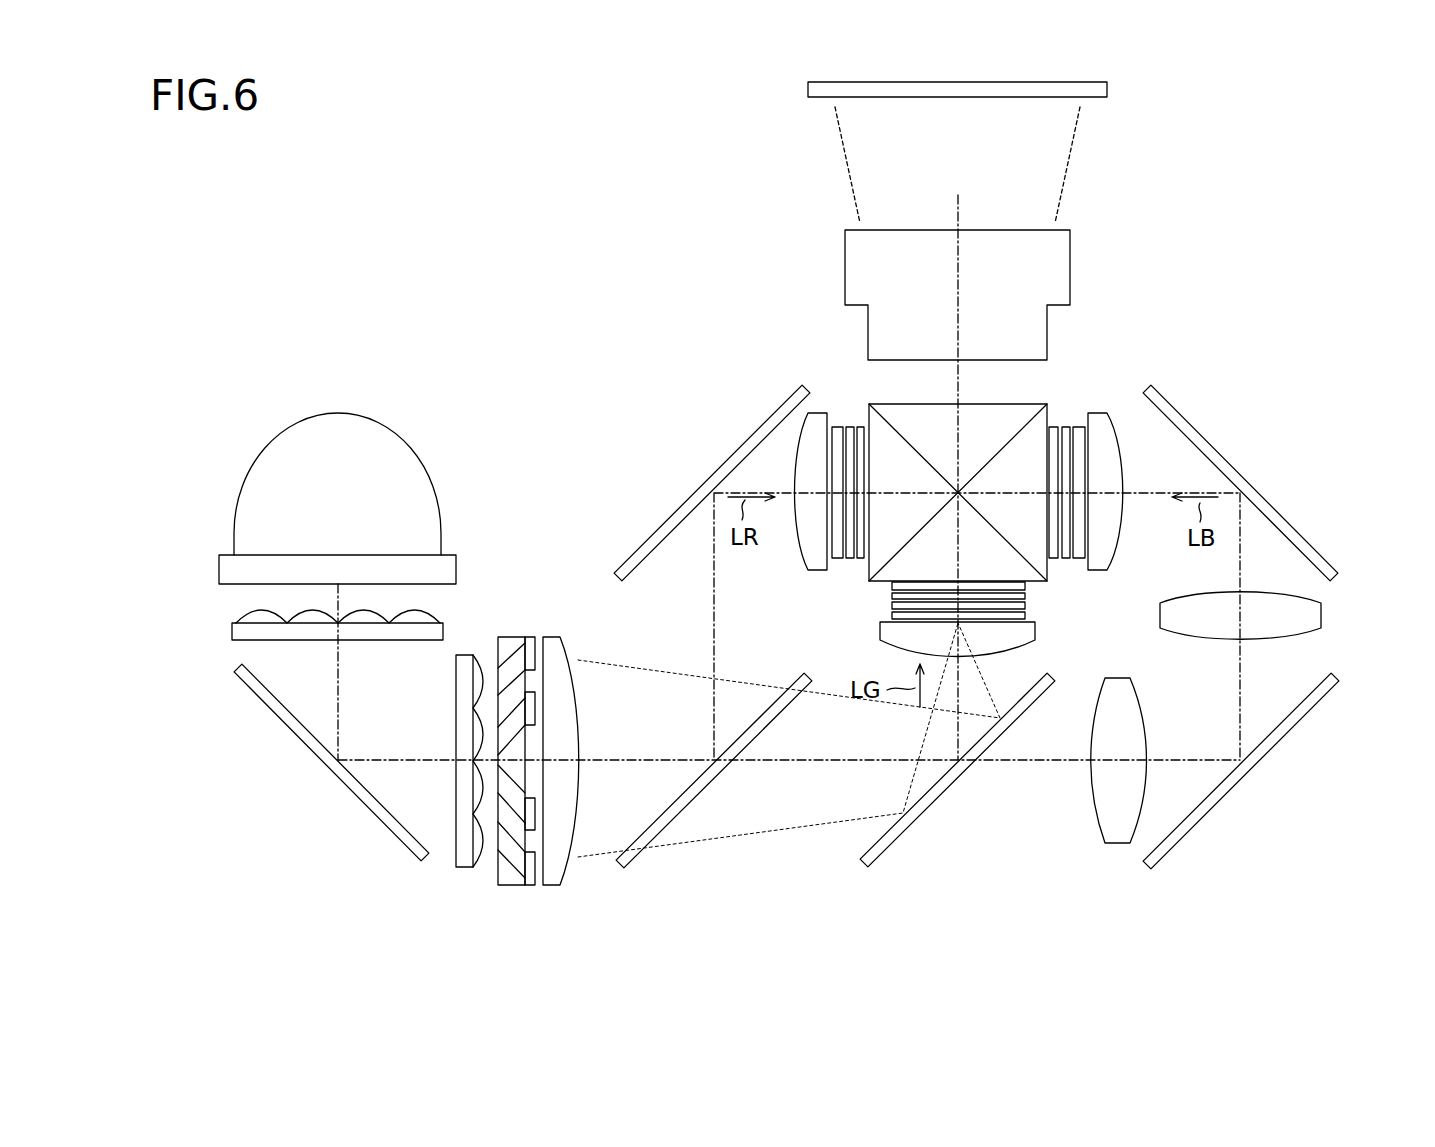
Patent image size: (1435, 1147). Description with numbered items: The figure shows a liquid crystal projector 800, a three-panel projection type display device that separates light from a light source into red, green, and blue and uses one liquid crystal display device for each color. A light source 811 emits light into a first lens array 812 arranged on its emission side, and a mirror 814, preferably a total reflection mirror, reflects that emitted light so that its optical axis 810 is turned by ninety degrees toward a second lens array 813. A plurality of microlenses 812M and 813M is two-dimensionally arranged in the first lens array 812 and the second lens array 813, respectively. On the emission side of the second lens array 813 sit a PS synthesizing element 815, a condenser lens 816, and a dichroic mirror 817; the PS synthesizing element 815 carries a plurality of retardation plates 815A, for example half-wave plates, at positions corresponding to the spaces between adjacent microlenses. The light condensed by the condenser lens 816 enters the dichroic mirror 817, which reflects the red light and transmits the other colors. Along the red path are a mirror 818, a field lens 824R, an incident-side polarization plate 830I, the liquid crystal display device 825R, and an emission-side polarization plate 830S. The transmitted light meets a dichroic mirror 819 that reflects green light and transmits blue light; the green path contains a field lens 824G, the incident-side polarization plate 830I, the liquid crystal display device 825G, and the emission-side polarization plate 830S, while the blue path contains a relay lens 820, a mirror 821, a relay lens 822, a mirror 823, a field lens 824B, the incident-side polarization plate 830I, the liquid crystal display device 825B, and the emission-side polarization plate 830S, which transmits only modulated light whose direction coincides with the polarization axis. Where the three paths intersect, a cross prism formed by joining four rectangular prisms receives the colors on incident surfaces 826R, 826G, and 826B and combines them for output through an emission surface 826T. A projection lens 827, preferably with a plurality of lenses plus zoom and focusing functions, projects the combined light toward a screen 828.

The liquid crystal projector 800 is at (420, 270).
The optical axis 810 is at (342, 698).
The light source 811 is at (296, 426).
The first lens array 812 is at (232, 630).
The microlenses 812M is at (250, 615).
The second lens array 813 is at (463, 870).
The microlenses 813M is at (483, 872).
The mirror 814 is at (258, 698).
The PS synthesizing element 815 is at (514, 888).
The retardation plates 815A is at (546, 888).
The condenser lens 816 is at (566, 888).
The dichroic mirror 817 is at (626, 869).
The mirror 818 is at (638, 552).
The dichroic mirror 819 is at (870, 869).
The relay lens 820 is at (1120, 845).
The mirror 821 is at (1165, 863).
The relay lens 822 is at (1326, 615).
The mirror 823 is at (1316, 548).
The field lens 824R is at (808, 413).
The field lens 824G is at (880, 630).
The field lens 824B is at (1102, 413).
The liquid crystal display device 825R is at (836, 427).
The liquid crystal display device 825G is at (892, 605).
The liquid crystal display device 825B is at (1058, 427).
The incident surface 826R is at (860, 427).
The incident surface 826G is at (892, 584).
The incident surface 826B is at (1050, 574).
The emission surface 826T is at (1052, 427).
The projection lens 827 is at (1072, 236).
The screen 828 is at (1108, 88).
The emission-side polarization plate 830S is at (850, 427).
The incident-side polarization plate 830I is at (856, 427).